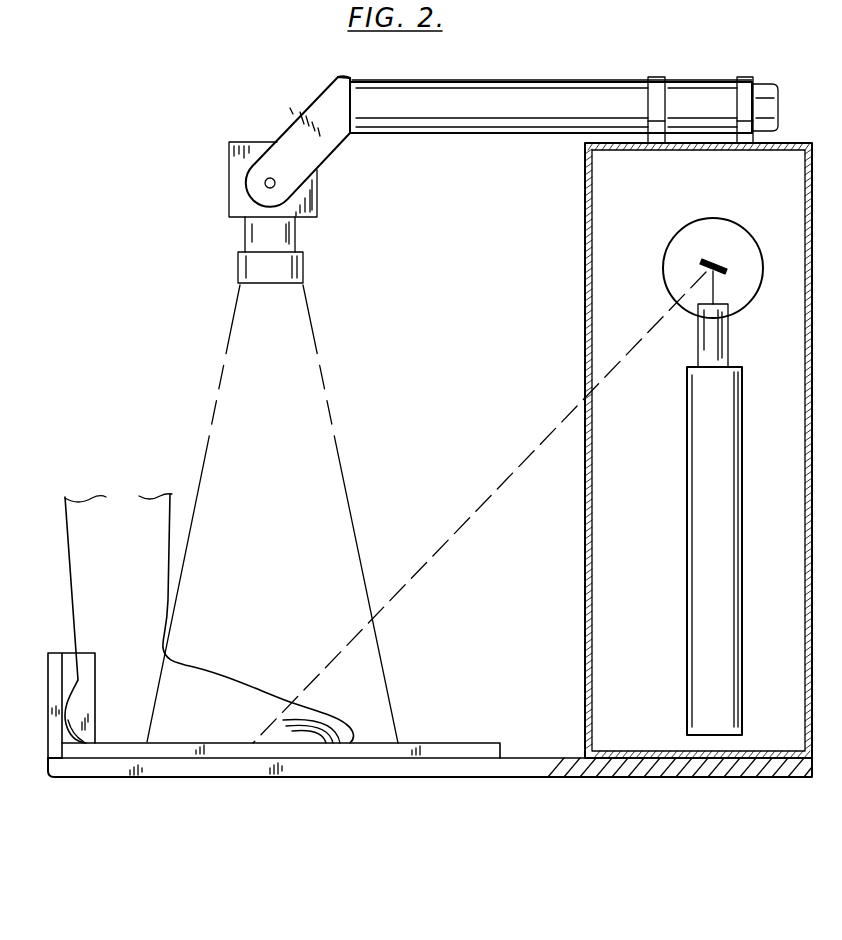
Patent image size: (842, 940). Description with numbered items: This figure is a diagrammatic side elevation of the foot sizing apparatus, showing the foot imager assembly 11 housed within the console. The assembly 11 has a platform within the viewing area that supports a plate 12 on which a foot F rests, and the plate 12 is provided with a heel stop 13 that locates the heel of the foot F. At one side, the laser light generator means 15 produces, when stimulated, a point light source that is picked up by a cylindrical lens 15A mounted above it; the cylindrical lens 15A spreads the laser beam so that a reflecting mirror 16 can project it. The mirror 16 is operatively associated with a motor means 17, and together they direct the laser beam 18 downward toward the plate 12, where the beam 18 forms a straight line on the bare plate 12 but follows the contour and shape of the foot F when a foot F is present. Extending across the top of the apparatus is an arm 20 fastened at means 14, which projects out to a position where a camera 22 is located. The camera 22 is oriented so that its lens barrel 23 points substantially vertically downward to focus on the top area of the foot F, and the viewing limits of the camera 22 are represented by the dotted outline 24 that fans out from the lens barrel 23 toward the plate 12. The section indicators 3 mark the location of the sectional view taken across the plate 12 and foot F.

The foot imager assembly 11 is at (360, 792).
The plate 12 is at (450, 748).
The heel stop 13 is at (53, 666).
The fastening means 14 is at (745, 77).
The laser light generator means 15 is at (697, 528).
The cylindrical lens 15A is at (728, 340).
The reflecting mirror 16 is at (700, 262).
The motor means 17 is at (716, 225).
The laser beam 18 is at (436, 549).
The arm 20 is at (505, 86).
The camera 22 is at (227, 185).
The lens barrel 23 is at (243, 268).
The viewing limits outline 24 is at (333, 427).
The section line 3- 3 is at (58, 607).
The foot F is at (190, 727).